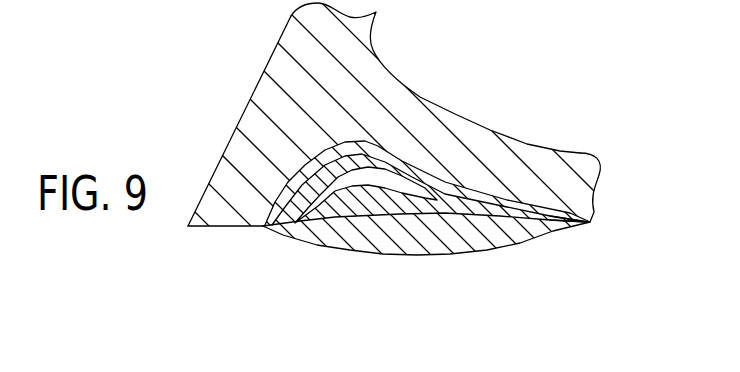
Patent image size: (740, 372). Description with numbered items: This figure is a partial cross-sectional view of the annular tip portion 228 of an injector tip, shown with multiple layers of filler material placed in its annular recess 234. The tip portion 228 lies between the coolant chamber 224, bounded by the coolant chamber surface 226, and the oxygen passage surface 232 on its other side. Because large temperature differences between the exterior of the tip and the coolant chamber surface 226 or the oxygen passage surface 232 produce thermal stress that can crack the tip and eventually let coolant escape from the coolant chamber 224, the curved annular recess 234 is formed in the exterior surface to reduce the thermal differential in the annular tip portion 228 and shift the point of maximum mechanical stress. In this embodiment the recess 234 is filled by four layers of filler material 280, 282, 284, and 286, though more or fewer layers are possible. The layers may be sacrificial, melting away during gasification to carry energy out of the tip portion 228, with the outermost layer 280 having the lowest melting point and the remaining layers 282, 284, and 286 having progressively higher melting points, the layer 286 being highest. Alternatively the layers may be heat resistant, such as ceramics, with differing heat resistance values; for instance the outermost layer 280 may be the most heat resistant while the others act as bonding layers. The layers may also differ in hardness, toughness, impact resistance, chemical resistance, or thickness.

The coolant chamber 224 is at (507, 67).
The coolant chamber surface 226 is at (527, 144).
The annular tip portion 228 is at (197, 266).
The oxygen passage surface 232 is at (246, 110).
The annular recess 234 is at (497, 274).
The filler material layer 280 is at (337, 225).
The filler material layer 282 is at (400, 208).
The filler material layer 284 is at (468, 212).
The filler material layer 286 is at (548, 213).